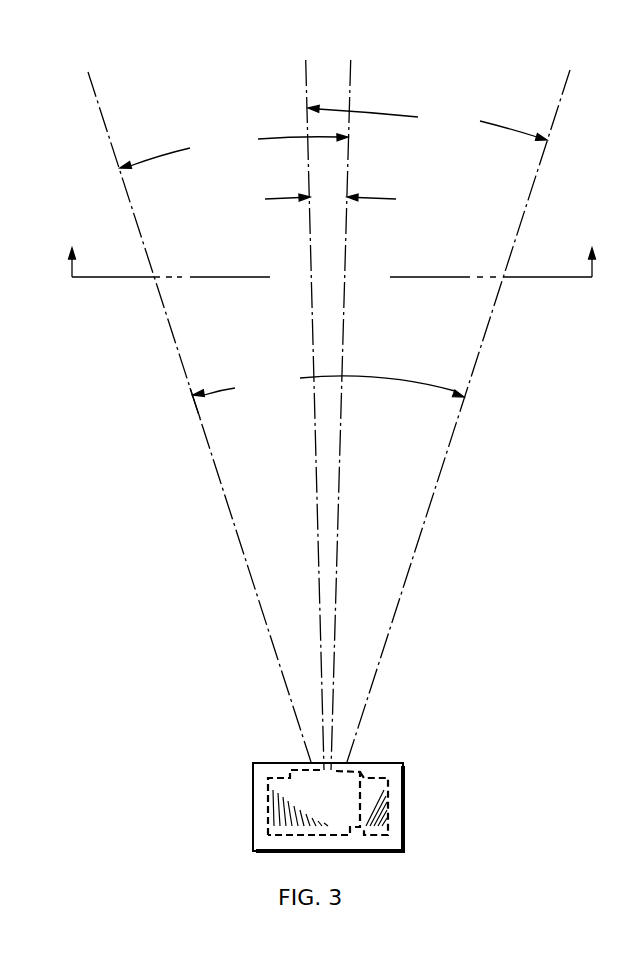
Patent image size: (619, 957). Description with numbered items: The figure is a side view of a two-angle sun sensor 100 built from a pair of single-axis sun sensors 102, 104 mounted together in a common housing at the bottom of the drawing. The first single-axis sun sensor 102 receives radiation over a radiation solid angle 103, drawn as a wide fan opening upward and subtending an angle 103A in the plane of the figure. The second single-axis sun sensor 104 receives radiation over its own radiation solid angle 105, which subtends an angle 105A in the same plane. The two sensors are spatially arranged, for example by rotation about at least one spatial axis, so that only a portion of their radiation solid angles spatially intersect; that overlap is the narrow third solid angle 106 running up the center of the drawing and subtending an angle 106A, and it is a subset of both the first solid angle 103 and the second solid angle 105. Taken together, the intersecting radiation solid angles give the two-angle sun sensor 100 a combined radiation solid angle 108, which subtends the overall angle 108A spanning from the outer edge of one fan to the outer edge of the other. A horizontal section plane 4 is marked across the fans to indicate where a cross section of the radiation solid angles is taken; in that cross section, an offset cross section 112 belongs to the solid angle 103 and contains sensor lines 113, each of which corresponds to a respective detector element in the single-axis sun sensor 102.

The two-angle sun sensor 100 is at (242, 758).
The single-axis sun sensor 102 is at (275, 770).
The single-axis sun sensor 104 is at (378, 768).
The radiation solid angle 103 is at (112, 148).
The angle 103A is at (234, 151).
The radiation solid angle 105 is at (545, 150).
The angle 105A is at (427, 122).
The third solid angle 106 is at (346, 250).
The angle 106A is at (361, 200).
The combined radiation solid angle 108 is at (196, 408).
The angle 108A is at (328, 385).
The plane 4- 4 is at (331, 249).
The cross section 112 is at (603, 462).
The sensor lines 113 is at (599, 519).